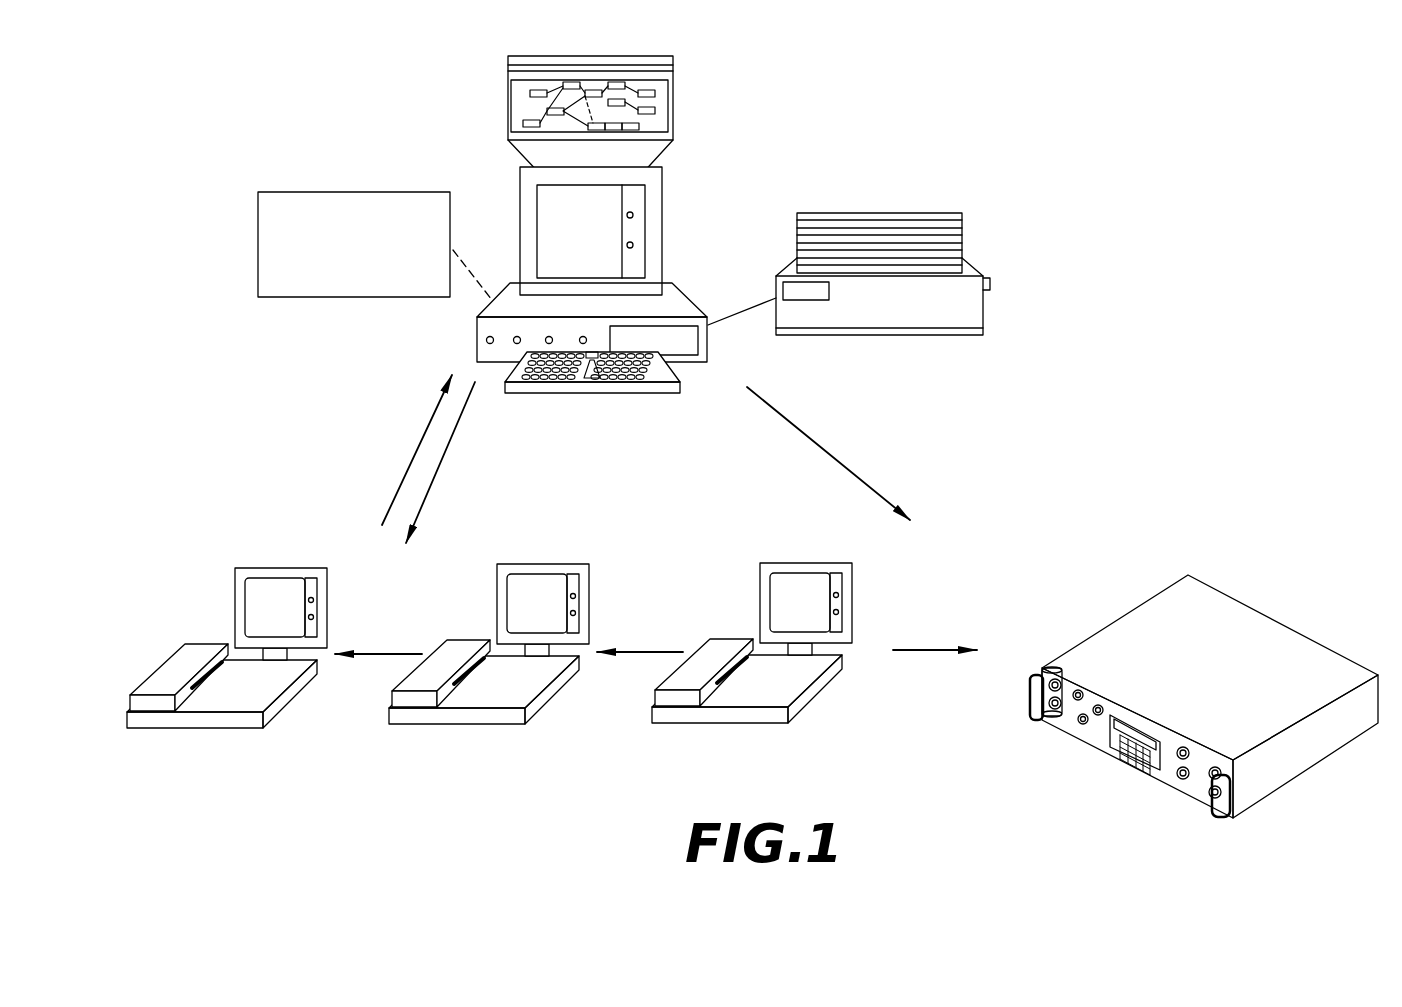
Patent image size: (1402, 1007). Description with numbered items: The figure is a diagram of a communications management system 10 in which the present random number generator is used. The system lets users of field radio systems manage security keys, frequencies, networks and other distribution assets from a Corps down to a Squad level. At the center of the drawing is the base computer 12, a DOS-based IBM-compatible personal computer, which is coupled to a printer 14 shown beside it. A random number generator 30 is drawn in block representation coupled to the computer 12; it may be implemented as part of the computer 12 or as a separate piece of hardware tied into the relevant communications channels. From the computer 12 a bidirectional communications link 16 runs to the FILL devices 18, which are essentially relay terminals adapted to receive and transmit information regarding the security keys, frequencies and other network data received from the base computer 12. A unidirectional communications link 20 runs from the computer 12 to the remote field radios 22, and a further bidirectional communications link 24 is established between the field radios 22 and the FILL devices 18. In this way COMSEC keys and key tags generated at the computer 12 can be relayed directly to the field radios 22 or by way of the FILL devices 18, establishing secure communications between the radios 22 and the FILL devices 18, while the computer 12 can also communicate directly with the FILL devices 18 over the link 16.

The communications management system 10 is at (413, 118).
The base computer 12 is at (687, 287).
The printer 14 is at (933, 335).
The bidirectional communications link 16 is at (410, 462).
The FILL devices 18 is at (202, 728).
The unidirectional communications link 20 is at (795, 422).
The field radios 22 is at (1237, 625).
The bidirectional communications link 24 is at (947, 652).
The random number generator 30 is at (258, 262).